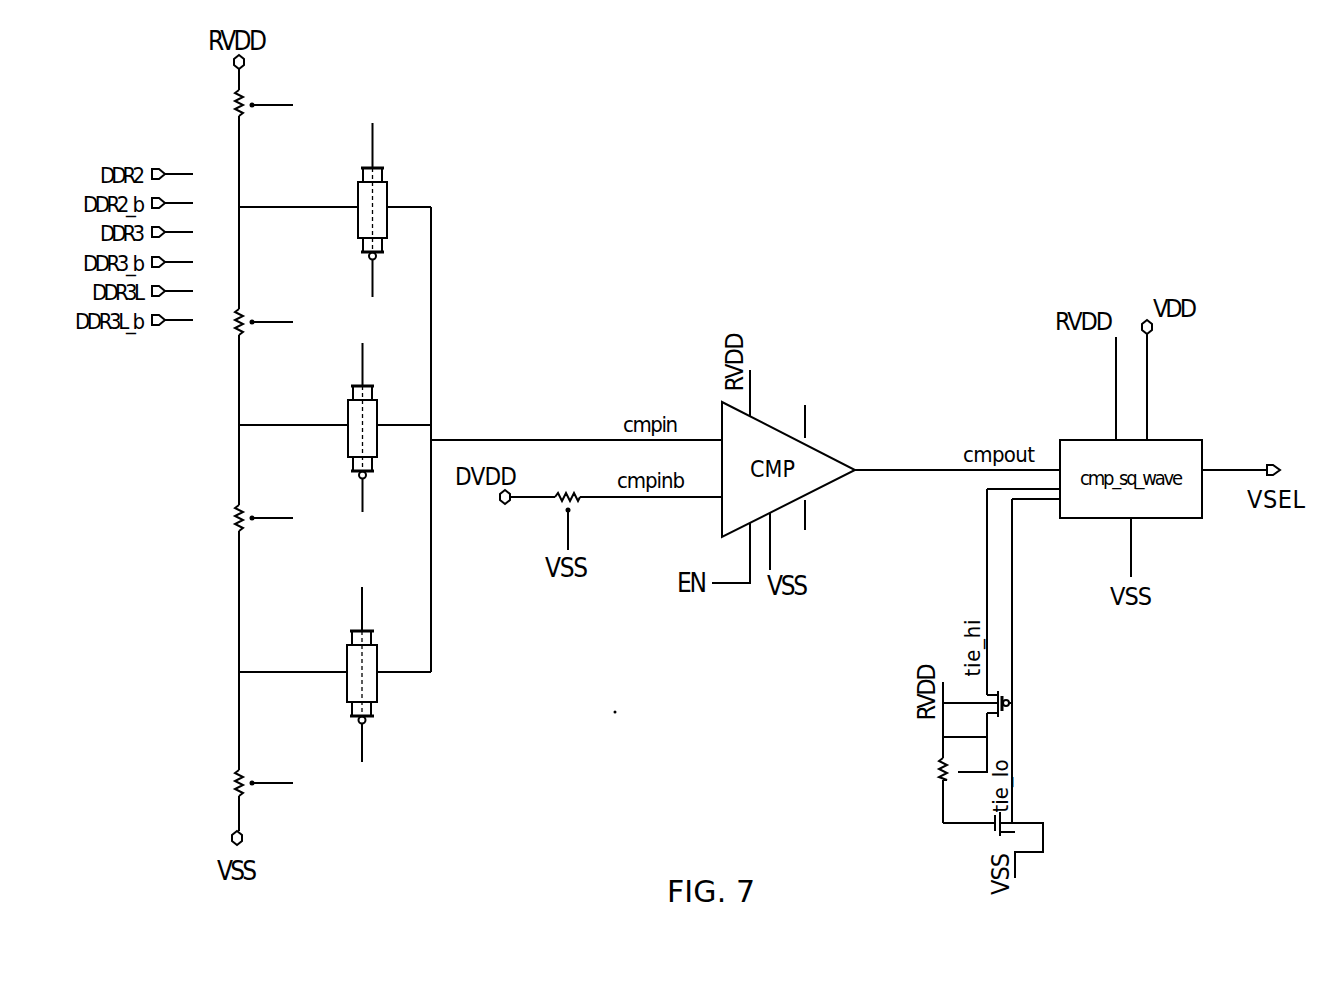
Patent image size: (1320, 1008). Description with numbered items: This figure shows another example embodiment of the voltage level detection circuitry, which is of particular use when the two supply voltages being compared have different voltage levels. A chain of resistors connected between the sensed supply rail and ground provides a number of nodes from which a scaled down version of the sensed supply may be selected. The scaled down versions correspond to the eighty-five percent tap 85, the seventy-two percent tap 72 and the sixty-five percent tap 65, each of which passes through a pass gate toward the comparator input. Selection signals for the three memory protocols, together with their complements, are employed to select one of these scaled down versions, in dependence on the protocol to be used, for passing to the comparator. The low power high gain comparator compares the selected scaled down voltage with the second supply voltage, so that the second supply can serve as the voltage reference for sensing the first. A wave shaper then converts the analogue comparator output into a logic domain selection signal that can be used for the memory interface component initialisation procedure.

The 0.85 RVDD tap pass gate (DDR2) 85 is at (335, 217).
The 0.72 RVDD tap pass gate (DDR3) 72 is at (335, 437).
The 0.65 RVDD tap pass gate (DDR3L) 65 is at (335, 684).